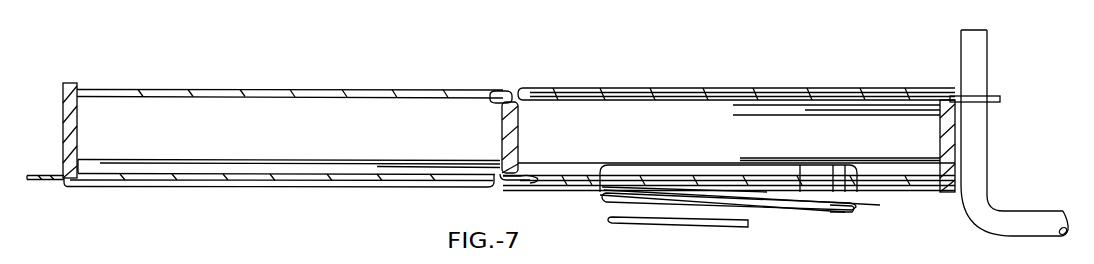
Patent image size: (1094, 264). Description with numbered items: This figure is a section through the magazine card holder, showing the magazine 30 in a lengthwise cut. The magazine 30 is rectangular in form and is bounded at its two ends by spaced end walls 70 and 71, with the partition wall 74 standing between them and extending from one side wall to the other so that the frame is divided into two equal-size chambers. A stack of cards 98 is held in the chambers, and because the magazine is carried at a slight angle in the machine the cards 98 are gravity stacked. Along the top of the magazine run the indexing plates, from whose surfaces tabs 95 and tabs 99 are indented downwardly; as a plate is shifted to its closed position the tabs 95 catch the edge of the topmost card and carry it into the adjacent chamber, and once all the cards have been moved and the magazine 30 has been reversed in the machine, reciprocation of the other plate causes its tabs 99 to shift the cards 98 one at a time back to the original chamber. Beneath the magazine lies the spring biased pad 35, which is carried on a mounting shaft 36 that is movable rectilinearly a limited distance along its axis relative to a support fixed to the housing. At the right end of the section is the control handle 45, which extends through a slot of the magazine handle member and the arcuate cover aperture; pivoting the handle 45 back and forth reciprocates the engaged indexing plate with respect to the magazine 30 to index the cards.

The magazine 30 is at (427, 84).
The end wall 70 is at (63, 135).
The cards 98 is at (385, 160).
The partition wall 74 is at (502, 140).
The tabs 95 is at (496, 96).
The tabs 99 is at (536, 180).
The spring biased pad 35 is at (840, 186).
The mounting shaft 36 is at (800, 208).
The end wall 71 is at (953, 98).
The control handle 45 is at (987, 168).